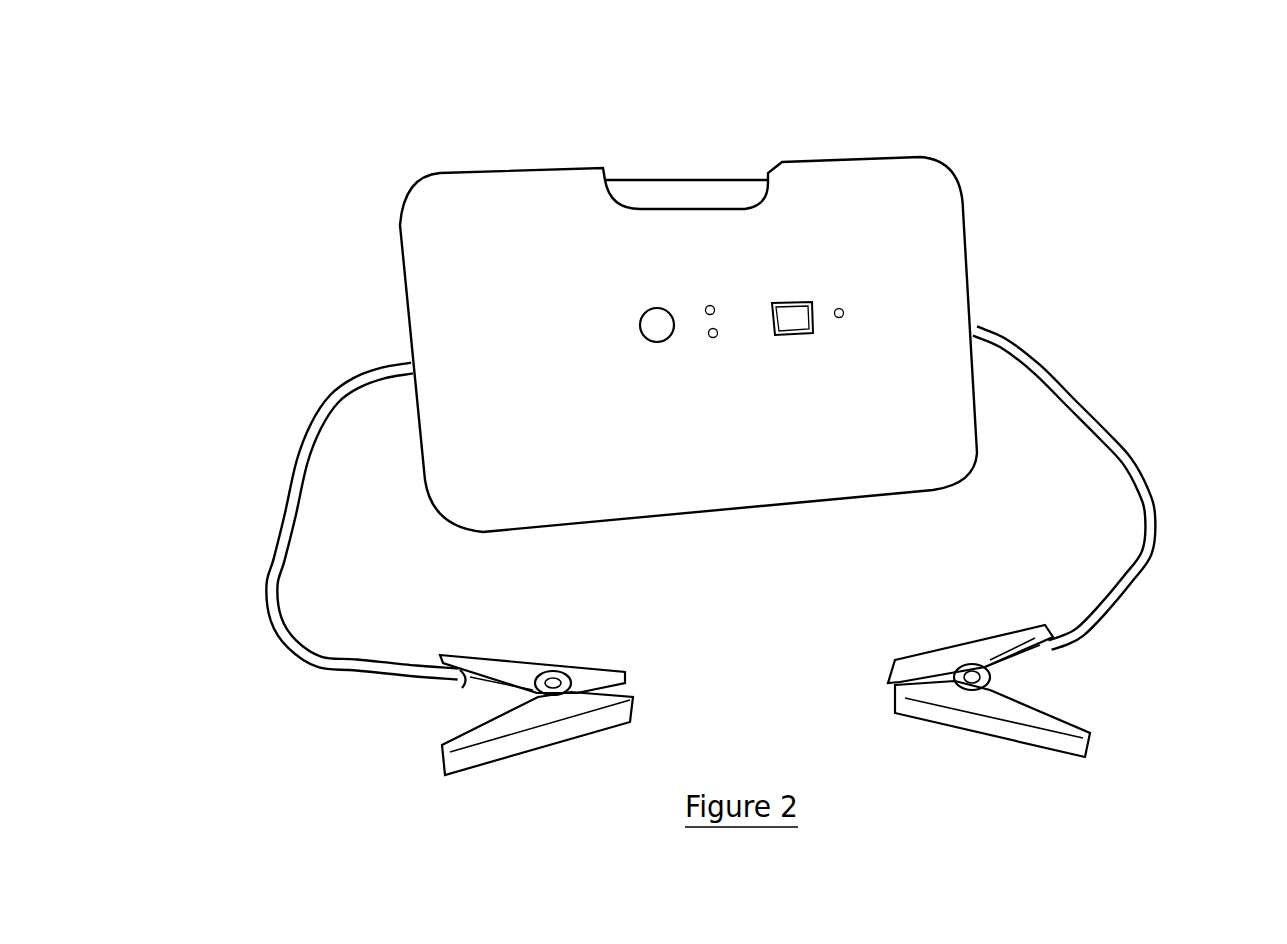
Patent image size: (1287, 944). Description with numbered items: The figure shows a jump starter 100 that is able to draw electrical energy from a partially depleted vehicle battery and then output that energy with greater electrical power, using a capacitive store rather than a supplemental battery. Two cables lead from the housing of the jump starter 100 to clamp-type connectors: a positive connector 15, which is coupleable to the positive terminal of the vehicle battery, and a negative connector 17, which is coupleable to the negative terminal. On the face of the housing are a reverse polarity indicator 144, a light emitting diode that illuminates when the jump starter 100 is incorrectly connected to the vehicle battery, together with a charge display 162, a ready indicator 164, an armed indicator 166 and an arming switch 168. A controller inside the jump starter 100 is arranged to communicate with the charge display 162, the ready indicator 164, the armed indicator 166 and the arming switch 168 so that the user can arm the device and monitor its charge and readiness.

The jump starter 100 is at (990, 178).
The arming switch 168 is at (650, 320).
The armed indicator 166 is at (710, 330).
The ready indicator 164 is at (711, 306).
The charge display 162 is at (797, 307).
The reverse polarity indicator 144 is at (840, 309).
The negative connector 17 is at (275, 562).
The positive connector 15 is at (1155, 554).